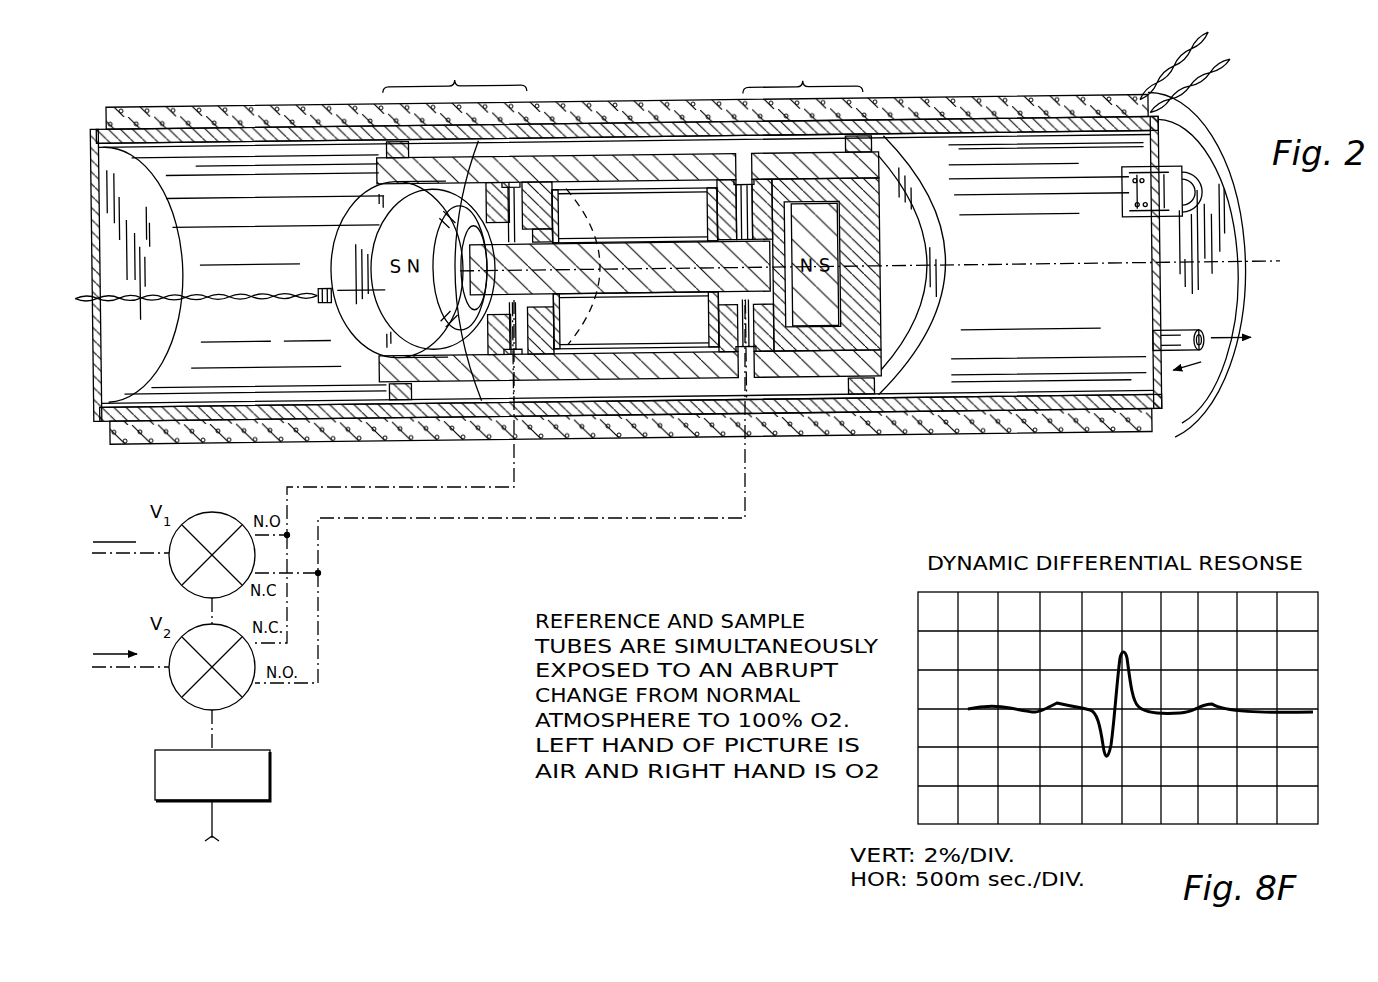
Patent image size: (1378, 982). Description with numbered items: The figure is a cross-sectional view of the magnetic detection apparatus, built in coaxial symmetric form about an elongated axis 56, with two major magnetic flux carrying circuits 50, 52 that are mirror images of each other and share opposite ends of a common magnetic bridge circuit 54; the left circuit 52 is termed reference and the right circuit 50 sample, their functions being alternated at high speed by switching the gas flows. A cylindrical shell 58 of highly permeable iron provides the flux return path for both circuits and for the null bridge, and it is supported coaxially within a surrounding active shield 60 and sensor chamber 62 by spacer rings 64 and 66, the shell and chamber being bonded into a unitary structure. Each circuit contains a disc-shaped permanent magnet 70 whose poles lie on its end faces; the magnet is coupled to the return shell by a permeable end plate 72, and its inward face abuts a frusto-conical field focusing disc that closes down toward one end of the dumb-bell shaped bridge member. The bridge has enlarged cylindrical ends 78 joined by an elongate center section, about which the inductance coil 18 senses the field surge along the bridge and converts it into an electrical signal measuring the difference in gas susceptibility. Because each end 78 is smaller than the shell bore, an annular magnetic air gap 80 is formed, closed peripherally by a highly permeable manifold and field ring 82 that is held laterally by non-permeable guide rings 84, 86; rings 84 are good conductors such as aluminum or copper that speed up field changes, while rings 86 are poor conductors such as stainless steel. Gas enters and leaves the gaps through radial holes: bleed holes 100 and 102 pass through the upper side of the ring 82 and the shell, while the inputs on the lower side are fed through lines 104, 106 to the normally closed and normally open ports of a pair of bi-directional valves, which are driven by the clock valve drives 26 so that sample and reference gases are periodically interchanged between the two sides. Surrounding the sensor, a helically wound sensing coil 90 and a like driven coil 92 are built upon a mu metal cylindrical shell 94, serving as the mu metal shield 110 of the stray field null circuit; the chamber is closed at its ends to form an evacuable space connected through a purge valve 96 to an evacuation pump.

The inductance coil 18 is at (657, 331).
The clock valve drives 26 is at (258, 773).
The first major magnetic flux carrying circuit 50 is at (811, 205).
The second major magnetic flux carrying circuit 52 is at (449, 208).
The common magnetic bridge circuit 54 is at (600, 154).
The elongated axis 56 is at (1070, 268).
The cylindrical shell 58 is at (643, 167).
The active shield 60 is at (1177, 433).
The sensor chamber 62 is at (1200, 368).
The spacer ring 64 is at (378, 153).
The spacer ring 66 is at (903, 142).
The permanent magnet 70 is at (477, 207).
The permeable end plate 72 is at (905, 250).
The enlarged end 78 is at (598, 290).
The magnetic air gap 80 is at (830, 185).
The manifold and field ring 82 is at (513, 395).
The guide ring 84 is at (510, 180).
The guide ring 86 is at (640, 181).
The sensing coil 90 is at (1207, 56).
The driven coil 92 is at (1220, 80).
The mu metal cylindrical shell 94 is at (1020, 100).
The purge valve 96 is at (1190, 334).
The bleed hole 100 is at (757, 176).
The bleed hole 102 is at (552, 181).
The line 104 is at (462, 488).
The line 106 is at (678, 516).
The mu metal shield 110 is at (1160, 123).